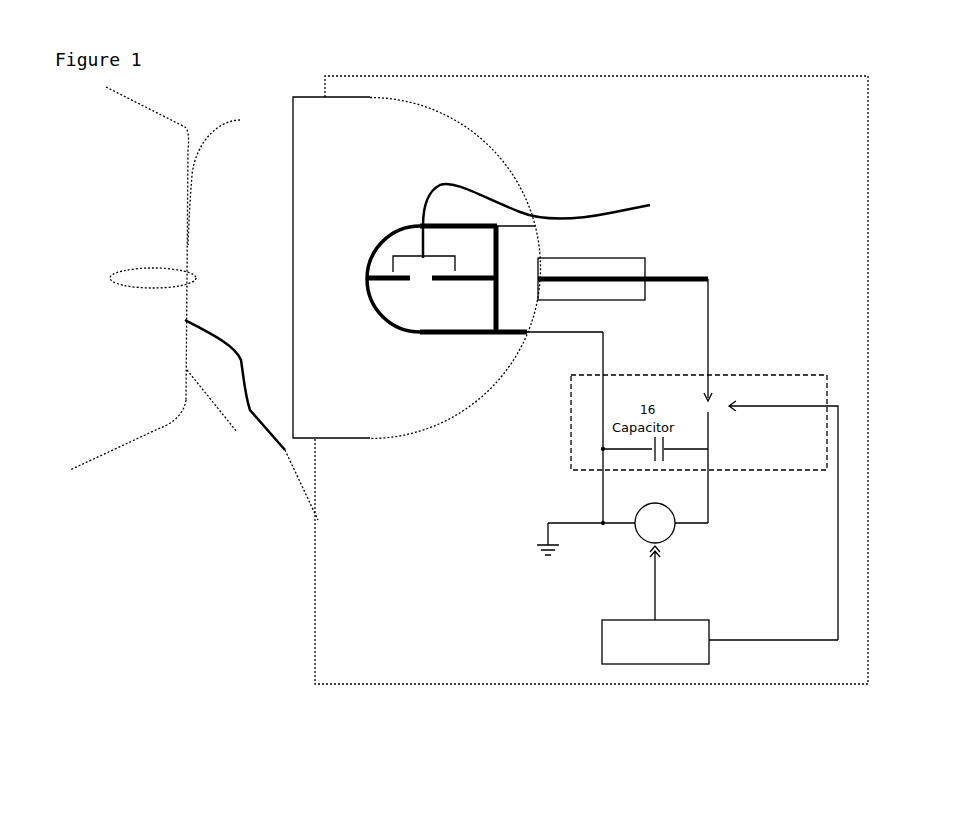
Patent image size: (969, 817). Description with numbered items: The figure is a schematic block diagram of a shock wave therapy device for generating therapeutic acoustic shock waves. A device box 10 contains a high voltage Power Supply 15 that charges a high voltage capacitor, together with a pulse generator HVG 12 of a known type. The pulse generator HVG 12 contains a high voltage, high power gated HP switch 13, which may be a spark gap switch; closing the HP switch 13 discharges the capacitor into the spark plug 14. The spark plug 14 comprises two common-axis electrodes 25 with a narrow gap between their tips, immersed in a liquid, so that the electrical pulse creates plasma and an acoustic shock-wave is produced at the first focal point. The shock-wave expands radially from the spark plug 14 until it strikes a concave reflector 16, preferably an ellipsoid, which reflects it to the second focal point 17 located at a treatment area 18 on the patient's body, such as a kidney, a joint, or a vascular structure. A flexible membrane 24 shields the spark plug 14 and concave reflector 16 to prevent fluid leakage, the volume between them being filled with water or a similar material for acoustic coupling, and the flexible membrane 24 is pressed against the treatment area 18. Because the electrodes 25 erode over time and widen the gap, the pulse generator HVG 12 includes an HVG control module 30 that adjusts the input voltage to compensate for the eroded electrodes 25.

The device box 10 is at (313, 558).
The pulse generator HVG 12 is at (678, 350).
The HP switch 13 is at (715, 395).
The spark plug 14 is at (445, 337).
The Power Supply 15 is at (675, 505).
The concave reflector 16 is at (512, 157).
The F2 17 is at (131, 266).
The treatment area 18 is at (190, 440).
The flexible membrane 24 is at (305, 487).
The electrodes 25 is at (708, 204).
The HVG control module 30 is at (598, 630).